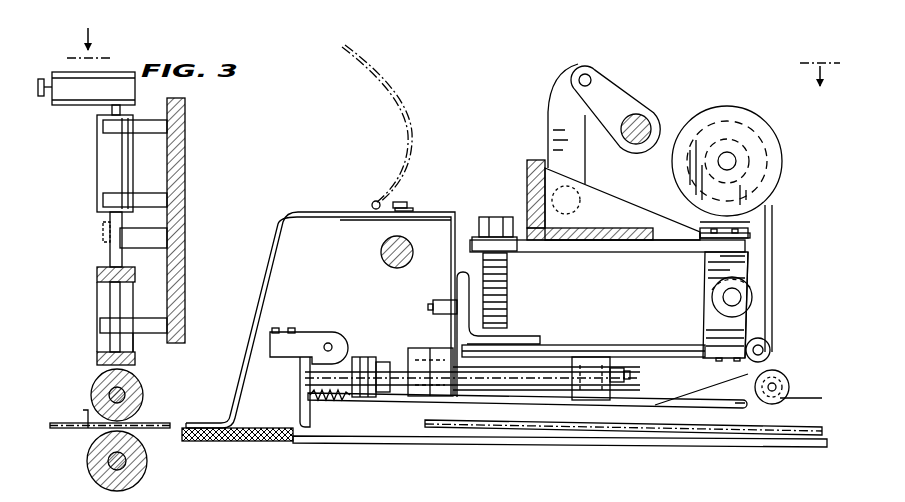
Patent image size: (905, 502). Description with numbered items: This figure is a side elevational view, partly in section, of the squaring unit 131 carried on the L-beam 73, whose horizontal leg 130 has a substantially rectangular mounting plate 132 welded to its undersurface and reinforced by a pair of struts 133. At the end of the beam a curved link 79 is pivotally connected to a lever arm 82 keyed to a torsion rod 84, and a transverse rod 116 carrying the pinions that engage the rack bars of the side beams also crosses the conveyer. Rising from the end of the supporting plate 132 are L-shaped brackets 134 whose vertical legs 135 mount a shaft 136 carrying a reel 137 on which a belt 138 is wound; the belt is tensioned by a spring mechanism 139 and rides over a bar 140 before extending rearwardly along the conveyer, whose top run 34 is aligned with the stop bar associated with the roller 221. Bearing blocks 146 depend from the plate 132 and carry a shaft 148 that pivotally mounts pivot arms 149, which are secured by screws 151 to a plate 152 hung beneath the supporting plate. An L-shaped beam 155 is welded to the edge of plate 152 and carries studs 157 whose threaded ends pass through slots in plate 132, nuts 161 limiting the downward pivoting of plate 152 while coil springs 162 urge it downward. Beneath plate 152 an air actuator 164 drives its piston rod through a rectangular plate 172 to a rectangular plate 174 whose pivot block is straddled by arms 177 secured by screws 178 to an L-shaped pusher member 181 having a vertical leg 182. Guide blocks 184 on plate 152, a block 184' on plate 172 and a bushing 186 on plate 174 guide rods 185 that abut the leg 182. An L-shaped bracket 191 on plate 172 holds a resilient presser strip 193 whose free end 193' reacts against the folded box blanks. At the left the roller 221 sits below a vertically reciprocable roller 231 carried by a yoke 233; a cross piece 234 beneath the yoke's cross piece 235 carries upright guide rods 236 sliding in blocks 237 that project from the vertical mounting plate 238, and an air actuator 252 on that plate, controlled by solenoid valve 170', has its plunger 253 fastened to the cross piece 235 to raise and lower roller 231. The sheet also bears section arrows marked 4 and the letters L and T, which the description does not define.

The section line 4- 4 is at (453, 67).
The top run of conveyer belt 34 is at (712, 445).
The L-beam 73 is at (525, 170).
The curved link 79 is at (560, 108).
The lever arm 82 is at (615, 85).
The torsion rod 84 is at (650, 119).
The rod 116 is at (395, 258).
The horizontal leg of L-beam 130 is at (597, 232).
The squaring unit 131 is at (472, 182).
The mounting plate 132 is at (637, 250).
The struts 133 is at (620, 207).
The L-shaped brackets 134 is at (700, 226).
The spring mechanism 139 is at (696, 200).
The vertical legs of brackets 135 is at (742, 223).
The shaft 136 is at (730, 155).
The reel 137 is at (700, 110).
The belt 138 is at (774, 255).
The bar 140 is at (771, 348).
The bearing blocks 146 is at (716, 262).
The shaft 148 is at (735, 297).
The pivot arms 149 is at (745, 324).
The screws 151 is at (712, 358).
The plate 152 is at (687, 345).
The L-shaped beam 155 is at (467, 280).
The studs 157 is at (495, 217).
The nuts 161 is at (515, 250).
The coil spring 162 is at (510, 298).
The air actuator 164 is at (545, 397).
The electric solenoid valve 170' is at (72, 103).
The rectangular plate 172 is at (462, 398).
The rectangular plate 174 is at (356, 399).
The arms 177 is at (290, 348).
The screws 178 is at (292, 328).
The L-shaped pusher member 181 is at (258, 441).
The vertical leg of pusher member 182 is at (308, 420).
The guide blocks 184 is at (591, 418).
The block 184' is at (472, 414).
The guide rod 185 is at (633, 379).
The bushing 186 is at (360, 355).
The L-shaped bracket 191 is at (428, 200).
The resilient presser strip 193 is at (320, 320).
The free end of presser strip 193' is at (214, 381).
The roller 221 is at (147, 462).
The vertically reciprocable roller 231 is at (146, 397).
The yoke 233 is at (142, 348).
The cross piece 234 is at (98, 358).
The cross piece of yoke 235 is at (140, 275).
The upright guide rods 236 is at (115, 293).
The blocks 237 is at (157, 232).
The vertical mounting plate 238 is at (185, 140).
The air actuator 252 is at (110, 165).
The plunger 253 is at (108, 222).
The label web L is at (90, 425).
The tape T is at (295, 396).